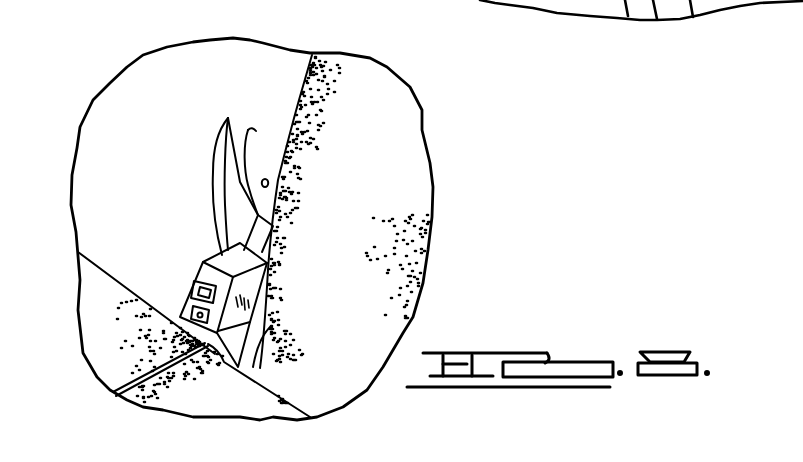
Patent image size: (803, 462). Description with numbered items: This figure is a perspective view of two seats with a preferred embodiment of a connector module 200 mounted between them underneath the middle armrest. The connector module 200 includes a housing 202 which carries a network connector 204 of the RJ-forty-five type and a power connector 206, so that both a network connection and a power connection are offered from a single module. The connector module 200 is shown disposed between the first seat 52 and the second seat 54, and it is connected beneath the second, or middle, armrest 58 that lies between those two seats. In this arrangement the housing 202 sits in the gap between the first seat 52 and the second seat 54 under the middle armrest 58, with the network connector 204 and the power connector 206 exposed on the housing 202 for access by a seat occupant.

The first seat 52 is at (100, 230).
The second seat 54 is at (413, 185).
The second (middle) armrest 58 is at (228, 118).
The connector module 200 is at (257, 253).
The housing 202 is at (252, 284).
The RJ-45 network connector 204 is at (190, 317).
The power connector 206 is at (203, 262).